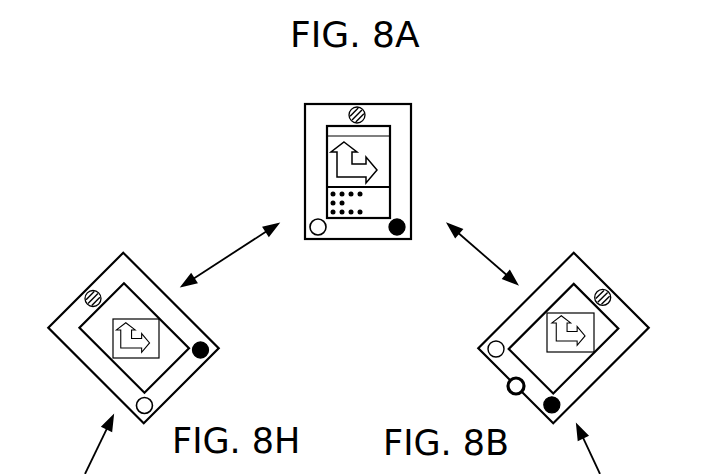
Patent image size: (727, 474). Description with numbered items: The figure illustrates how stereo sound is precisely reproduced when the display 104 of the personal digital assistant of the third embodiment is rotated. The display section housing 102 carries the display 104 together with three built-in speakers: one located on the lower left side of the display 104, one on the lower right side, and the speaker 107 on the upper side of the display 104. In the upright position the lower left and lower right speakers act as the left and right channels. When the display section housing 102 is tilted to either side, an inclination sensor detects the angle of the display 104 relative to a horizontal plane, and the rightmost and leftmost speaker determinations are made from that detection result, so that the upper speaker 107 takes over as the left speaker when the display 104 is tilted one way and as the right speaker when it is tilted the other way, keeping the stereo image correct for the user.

The display section housing 102 is at (305, 137).
The display 104 is at (392, 165).
The speaker 107 is at (357, 107).